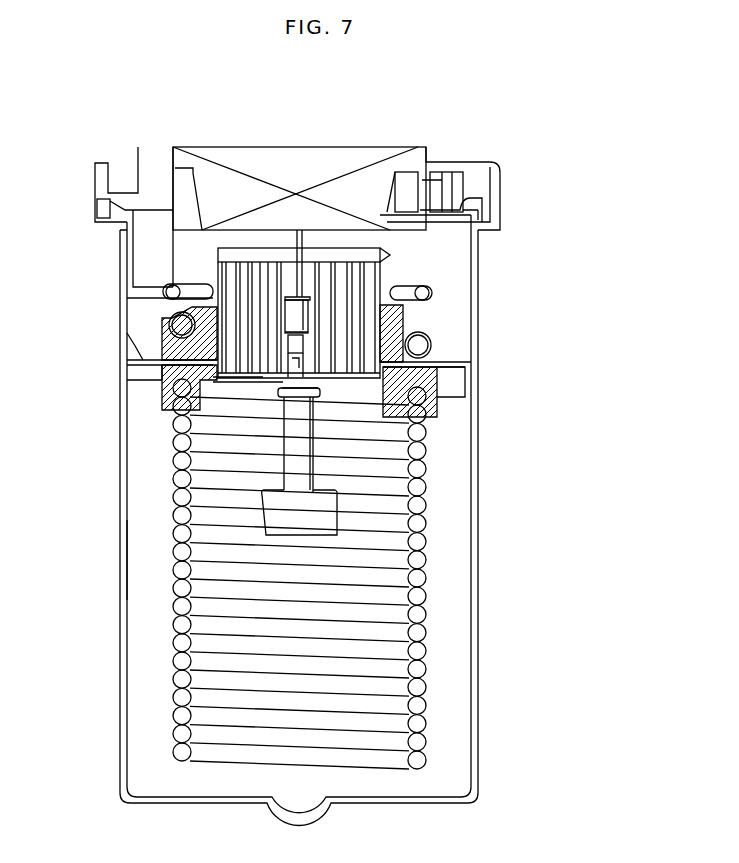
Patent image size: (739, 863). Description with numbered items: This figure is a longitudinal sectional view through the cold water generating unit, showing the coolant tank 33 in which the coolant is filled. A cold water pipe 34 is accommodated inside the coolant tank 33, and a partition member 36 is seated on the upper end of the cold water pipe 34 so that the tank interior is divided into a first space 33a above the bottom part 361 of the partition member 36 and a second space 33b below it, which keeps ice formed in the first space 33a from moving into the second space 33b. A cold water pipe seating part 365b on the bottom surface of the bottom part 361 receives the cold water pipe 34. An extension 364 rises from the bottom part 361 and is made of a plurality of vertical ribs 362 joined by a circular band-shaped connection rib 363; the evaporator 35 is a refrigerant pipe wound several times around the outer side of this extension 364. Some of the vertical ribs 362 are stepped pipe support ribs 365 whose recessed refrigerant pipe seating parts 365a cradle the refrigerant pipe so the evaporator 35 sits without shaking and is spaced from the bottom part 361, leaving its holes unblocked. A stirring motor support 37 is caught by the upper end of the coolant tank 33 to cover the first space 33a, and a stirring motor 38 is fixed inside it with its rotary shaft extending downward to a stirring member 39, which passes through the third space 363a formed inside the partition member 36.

The coolant tank 33 is at (478, 541).
The first space 33a is at (127, 328).
The second space 33b is at (152, 549).
The cold water pipe 34 is at (418, 614).
The evaporator 35 is at (165, 302).
The partition member 36 is at (578, 263).
The bottom part 361 is at (127, 343).
The vertical ribs 362 is at (385, 272).
The connection rib 363 is at (385, 250).
The third space 363a is at (344, 322).
The extension 364 is at (527, 250).
The pipe support ribs 365 is at (533, 342).
The refrigerant pipe seating parts 365a is at (432, 352).
The cold water pipe seating part 365b is at (440, 378).
The stirring motor support 37 is at (470, 200).
The stirring motor 38 is at (311, 162).
The stirring member 39 is at (300, 457).